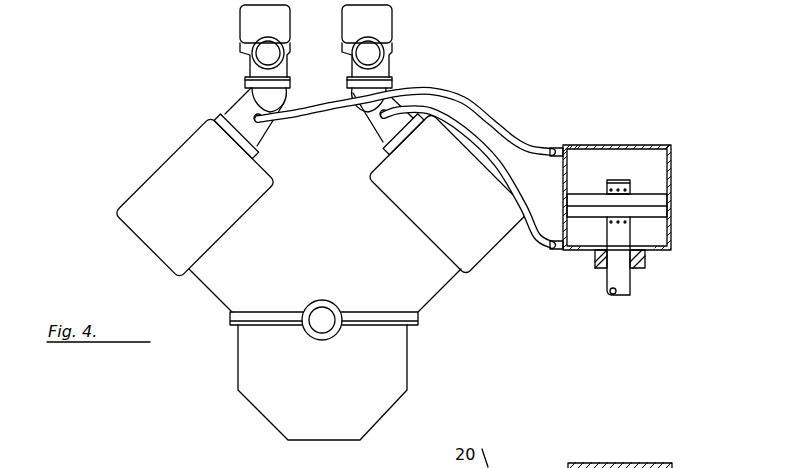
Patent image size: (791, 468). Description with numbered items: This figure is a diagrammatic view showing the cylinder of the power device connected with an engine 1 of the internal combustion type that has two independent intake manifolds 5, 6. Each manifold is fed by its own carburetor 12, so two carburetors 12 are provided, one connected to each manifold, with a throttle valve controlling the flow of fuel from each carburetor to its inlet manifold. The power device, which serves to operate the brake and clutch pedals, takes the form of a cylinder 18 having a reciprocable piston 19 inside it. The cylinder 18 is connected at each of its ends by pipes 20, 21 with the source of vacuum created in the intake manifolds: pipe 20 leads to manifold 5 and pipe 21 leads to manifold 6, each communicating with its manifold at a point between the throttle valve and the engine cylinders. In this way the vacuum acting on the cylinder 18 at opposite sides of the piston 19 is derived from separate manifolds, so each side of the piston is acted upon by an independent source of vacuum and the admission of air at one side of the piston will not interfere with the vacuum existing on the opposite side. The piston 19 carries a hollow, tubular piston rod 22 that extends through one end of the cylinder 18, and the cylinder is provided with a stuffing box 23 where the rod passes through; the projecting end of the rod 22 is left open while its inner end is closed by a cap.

The engine 1 is at (397, 267).
The intake manifold 5 is at (243, 121).
The intake manifold 6 is at (370, 108).
The carburetor 12 is at (277, 24).
The cylinder 18 is at (668, 158).
The piston 19 is at (658, 201).
The pipe 20 is at (522, 139).
The pipe 21 is at (541, 242).
The piston rod 22 is at (622, 282).
The stuffing box 23 is at (645, 258).